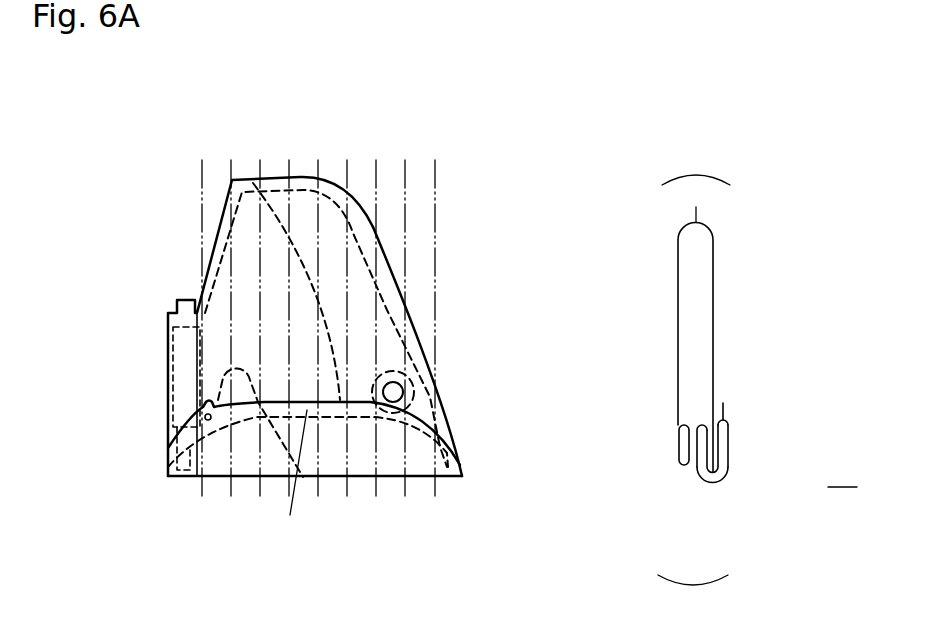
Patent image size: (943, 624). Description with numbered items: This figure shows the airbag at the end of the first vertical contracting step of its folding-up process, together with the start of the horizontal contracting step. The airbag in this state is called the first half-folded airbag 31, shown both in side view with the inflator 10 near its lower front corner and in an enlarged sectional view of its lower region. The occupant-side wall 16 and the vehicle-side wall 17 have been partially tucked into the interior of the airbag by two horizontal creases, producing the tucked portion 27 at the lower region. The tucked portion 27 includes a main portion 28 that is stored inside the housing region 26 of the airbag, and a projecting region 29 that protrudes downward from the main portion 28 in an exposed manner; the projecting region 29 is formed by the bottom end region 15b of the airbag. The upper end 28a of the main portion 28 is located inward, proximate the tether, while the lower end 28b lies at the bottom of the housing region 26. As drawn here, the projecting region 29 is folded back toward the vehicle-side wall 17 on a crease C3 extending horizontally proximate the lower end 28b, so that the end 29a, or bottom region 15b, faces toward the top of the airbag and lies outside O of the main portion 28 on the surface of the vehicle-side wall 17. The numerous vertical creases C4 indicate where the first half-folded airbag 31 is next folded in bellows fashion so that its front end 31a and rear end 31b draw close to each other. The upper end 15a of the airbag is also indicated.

The inflator 10 is at (185, 298).
The upper end portion 15a is at (302, 175).
The bottom end region 15b is at (782, 360).
The occupant-side wall 16 is at (383, 300).
The vehicle-side wall 17 is at (383, 325).
The housing region 26 is at (679, 430).
The tucked portion 27 is at (690, 485).
The main portion 28 is at (728, 437).
The upper end of main portion 28a is at (697, 435).
The lower end of main portion 28b is at (412, 478).
The projecting region 29 is at (418, 440).
The end of projecting region 29a is at (499, 437).
The first half-folded airbag 31 is at (448, 222).
The front end 31a is at (440, 383).
The rear end 31b is at (168, 385).
The crease C3 is at (212, 480).
The vertical creases C4 is at (406, 160).
The outside O is at (842, 468).